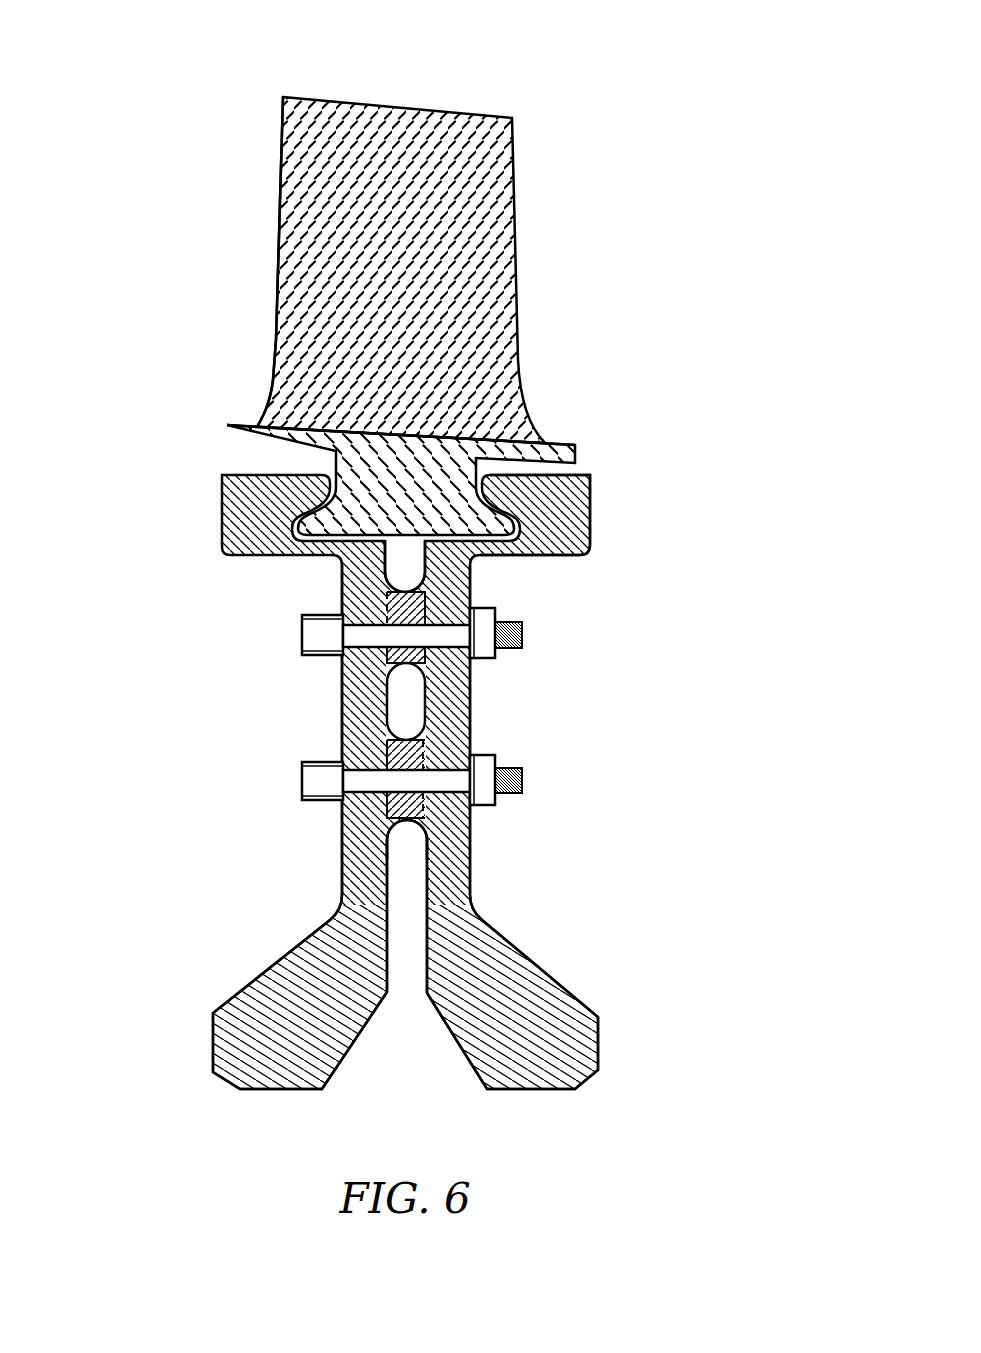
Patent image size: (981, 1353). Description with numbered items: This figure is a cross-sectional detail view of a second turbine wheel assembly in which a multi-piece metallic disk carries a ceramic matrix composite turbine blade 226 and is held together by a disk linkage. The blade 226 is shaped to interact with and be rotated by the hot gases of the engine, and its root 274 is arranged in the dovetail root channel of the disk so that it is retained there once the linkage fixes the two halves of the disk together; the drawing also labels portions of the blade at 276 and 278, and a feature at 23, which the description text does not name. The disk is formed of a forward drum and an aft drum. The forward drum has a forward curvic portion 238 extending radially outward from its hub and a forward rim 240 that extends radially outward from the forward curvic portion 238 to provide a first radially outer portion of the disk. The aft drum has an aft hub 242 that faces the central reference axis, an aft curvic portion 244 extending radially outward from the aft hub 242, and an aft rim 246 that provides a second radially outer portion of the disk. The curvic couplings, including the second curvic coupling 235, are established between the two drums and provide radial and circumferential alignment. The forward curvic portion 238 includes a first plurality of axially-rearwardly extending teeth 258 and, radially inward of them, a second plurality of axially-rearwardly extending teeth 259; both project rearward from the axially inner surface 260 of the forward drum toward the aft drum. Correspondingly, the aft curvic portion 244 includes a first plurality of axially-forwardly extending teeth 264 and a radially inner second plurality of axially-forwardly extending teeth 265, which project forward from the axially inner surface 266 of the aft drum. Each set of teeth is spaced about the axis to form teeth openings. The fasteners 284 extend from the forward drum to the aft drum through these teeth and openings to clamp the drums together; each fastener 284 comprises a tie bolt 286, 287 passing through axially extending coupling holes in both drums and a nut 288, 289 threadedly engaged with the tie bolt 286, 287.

The turbine blade 226 is at (545, 182).
The airfoil 276 is at (280, 180).
The platform 278 is at (233, 418).
The root 274 is at (333, 467).
The forward rim 240 is at (173, 525).
The aft rim 246 is at (613, 492).
The aft curvic portion 244 is at (492, 688).
The forward curvic portion 238 is at (307, 728).
The first disk arm 23 is at (213, 1042).
The aft hub 242 is at (600, 1042).
The axially inner surface of the forward drum 260 is at (387, 938).
The axially inner surface of the aft drum 266 is at (428, 890).
The first plurality of axially-rearwardly extending teeth 258 is at (430, 604).
The second plurality of axially-forwardly extending teeth 265 is at (387, 815).
The first plurality of axially-forwardly extending teeth 264 is at (387, 650).
The second plurality of axially-rearwardly extending teeth 259 is at (425, 818).
The fasteners 284 is at (350, 712).
The tie bolt 286 is at (303, 640).
The nut 288 is at (480, 607).
The second curvic coupling 235 is at (396, 777).
The tie bolt 287 is at (303, 778).
The nut 289 is at (483, 805).